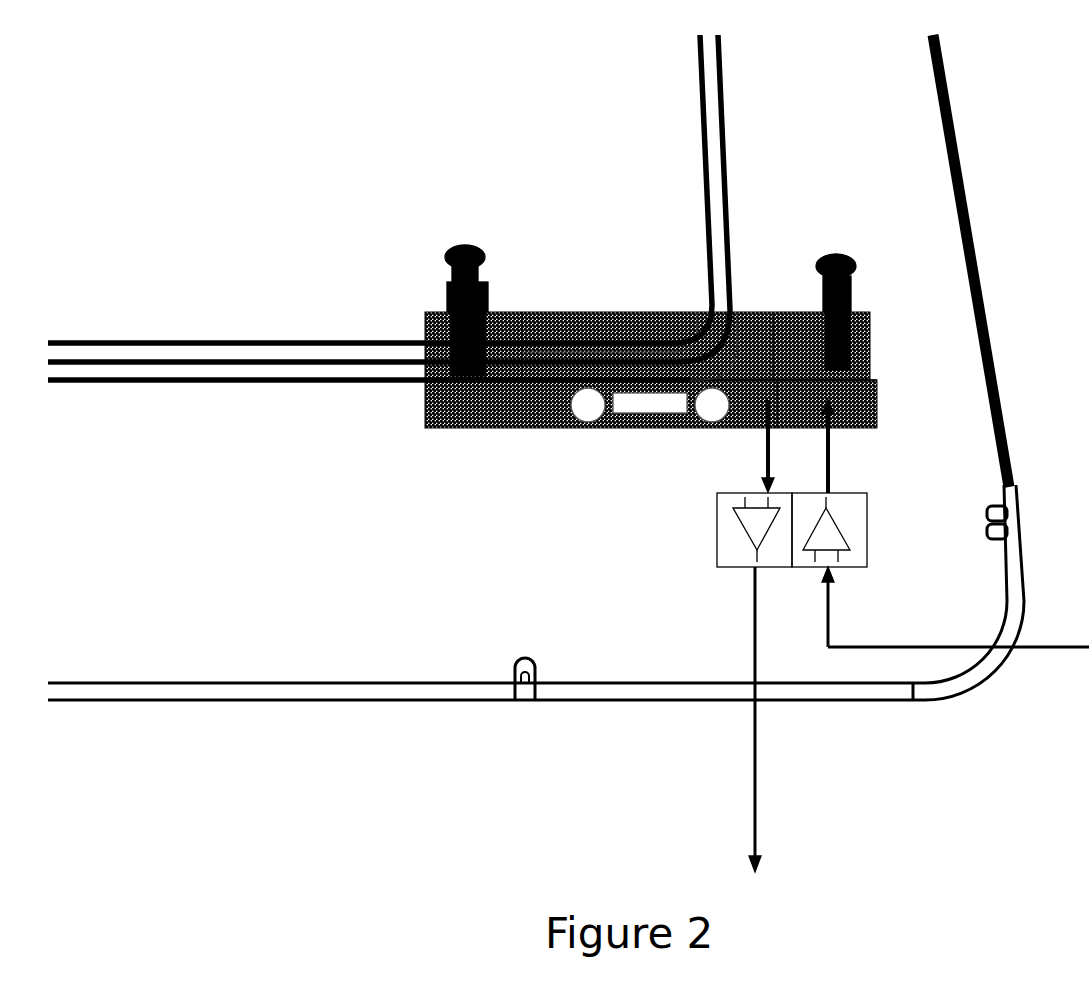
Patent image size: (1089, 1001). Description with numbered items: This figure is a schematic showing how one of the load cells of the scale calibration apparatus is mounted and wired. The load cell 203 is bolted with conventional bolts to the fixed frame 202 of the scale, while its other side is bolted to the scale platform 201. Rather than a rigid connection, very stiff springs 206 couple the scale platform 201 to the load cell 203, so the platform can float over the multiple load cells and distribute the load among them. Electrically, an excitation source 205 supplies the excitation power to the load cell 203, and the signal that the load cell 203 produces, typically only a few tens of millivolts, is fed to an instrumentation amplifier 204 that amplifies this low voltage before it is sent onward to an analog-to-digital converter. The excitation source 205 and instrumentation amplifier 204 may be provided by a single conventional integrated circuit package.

The scale platform 201 is at (590, 118).
The fixed frame 202 is at (912, 155).
The load cell 203 is at (770, 318).
The instrumentation amplifier 204 is at (715, 500).
The excitation source 205 is at (862, 510).
The springs 206 is at (427, 317).